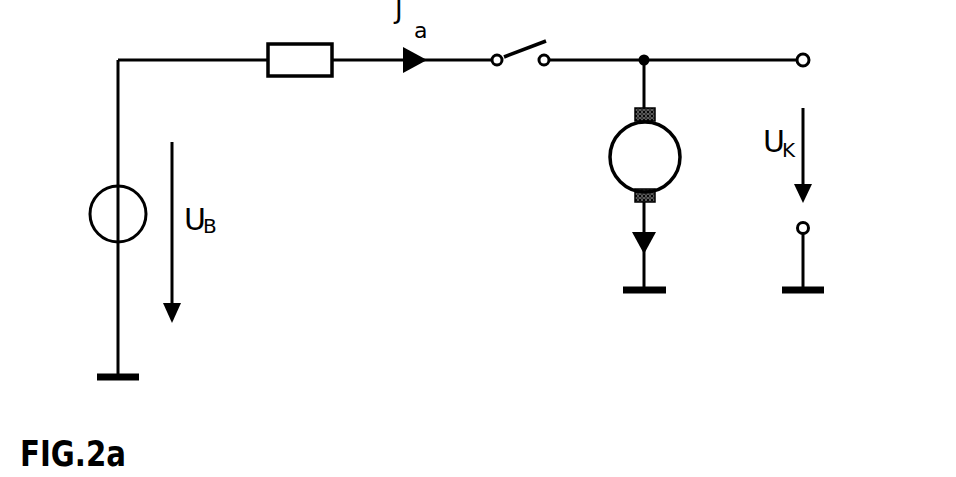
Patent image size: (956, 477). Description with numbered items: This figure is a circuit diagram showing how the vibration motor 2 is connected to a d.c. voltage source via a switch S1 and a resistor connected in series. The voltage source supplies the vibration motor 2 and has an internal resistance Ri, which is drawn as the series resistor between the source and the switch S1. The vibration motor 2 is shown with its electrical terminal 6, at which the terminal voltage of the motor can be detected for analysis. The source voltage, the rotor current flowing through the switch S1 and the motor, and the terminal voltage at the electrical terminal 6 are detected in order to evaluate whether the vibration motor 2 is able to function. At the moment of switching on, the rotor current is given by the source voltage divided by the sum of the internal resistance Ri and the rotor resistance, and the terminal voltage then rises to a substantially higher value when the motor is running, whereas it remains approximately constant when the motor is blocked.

The vibration motor 2 is at (647, 175).
The electrical terminal 6 is at (637, 277).
The switch S1 is at (520, 34).
The internal resistance Ri is at (300, 38).